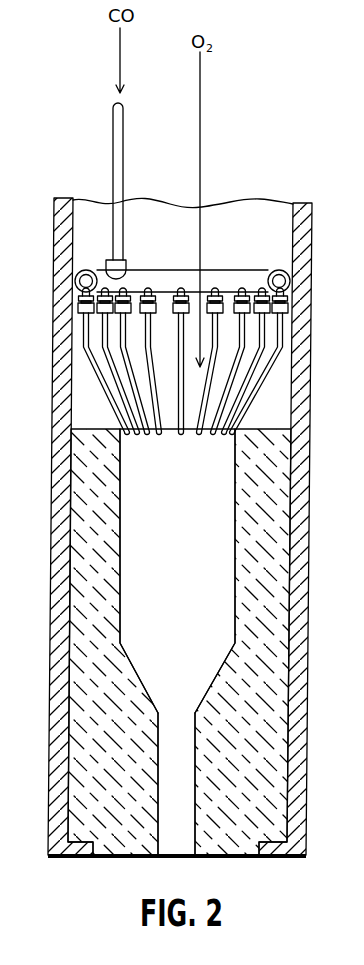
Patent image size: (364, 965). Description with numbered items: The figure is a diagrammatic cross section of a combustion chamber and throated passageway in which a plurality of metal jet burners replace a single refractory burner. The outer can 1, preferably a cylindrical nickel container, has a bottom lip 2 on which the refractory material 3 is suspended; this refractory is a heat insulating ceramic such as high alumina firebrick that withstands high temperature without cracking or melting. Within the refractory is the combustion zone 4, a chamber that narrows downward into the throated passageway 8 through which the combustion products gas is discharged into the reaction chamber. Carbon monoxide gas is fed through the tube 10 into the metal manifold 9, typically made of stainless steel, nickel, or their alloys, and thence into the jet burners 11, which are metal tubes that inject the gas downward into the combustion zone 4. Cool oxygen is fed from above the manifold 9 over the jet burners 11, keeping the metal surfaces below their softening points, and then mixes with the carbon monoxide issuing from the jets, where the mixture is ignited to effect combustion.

The can 1 is at (50, 604).
The bottom lip 2 is at (57, 857).
The refractory material 3 is at (277, 673).
The combustion zone 4 is at (177, 571).
The throated passageway 8 is at (176, 784).
The metal manifold 9 is at (240, 270).
The tube 10 is at (112, 137).
The metal jet burners 11 is at (278, 367).